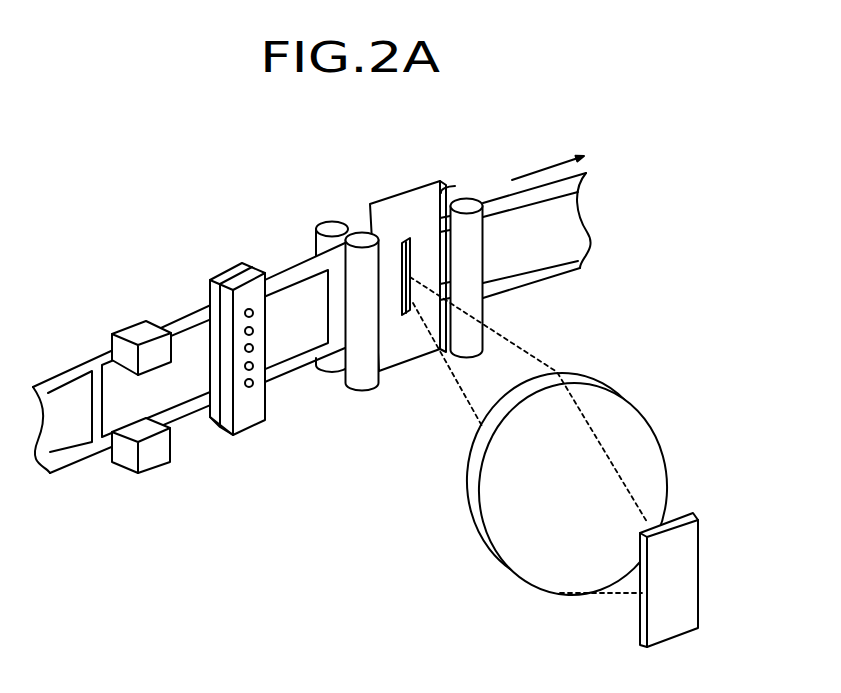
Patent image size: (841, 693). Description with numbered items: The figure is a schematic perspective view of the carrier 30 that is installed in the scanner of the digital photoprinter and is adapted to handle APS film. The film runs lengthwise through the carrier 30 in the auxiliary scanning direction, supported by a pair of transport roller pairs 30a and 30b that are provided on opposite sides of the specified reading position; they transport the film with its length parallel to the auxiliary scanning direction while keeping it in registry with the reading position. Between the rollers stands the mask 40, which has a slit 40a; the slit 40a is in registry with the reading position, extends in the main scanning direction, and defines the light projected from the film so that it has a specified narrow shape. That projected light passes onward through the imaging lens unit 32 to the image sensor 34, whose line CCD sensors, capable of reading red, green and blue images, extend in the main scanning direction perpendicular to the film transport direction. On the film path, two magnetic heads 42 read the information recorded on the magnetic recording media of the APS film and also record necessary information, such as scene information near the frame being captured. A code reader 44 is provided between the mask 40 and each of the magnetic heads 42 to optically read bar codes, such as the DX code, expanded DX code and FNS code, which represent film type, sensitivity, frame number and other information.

The carrier 30 is at (335, 183).
The transport roller pair 30a is at (360, 372).
The transport roller pair 30b is at (467, 278).
The imaging lens unit 32 is at (615, 418).
The image sensor 34 is at (682, 570).
The mask 40 is at (402, 345).
The slit 40a is at (405, 243).
The magnetic head 42 is at (138, 333).
The code reader 44 is at (230, 275).